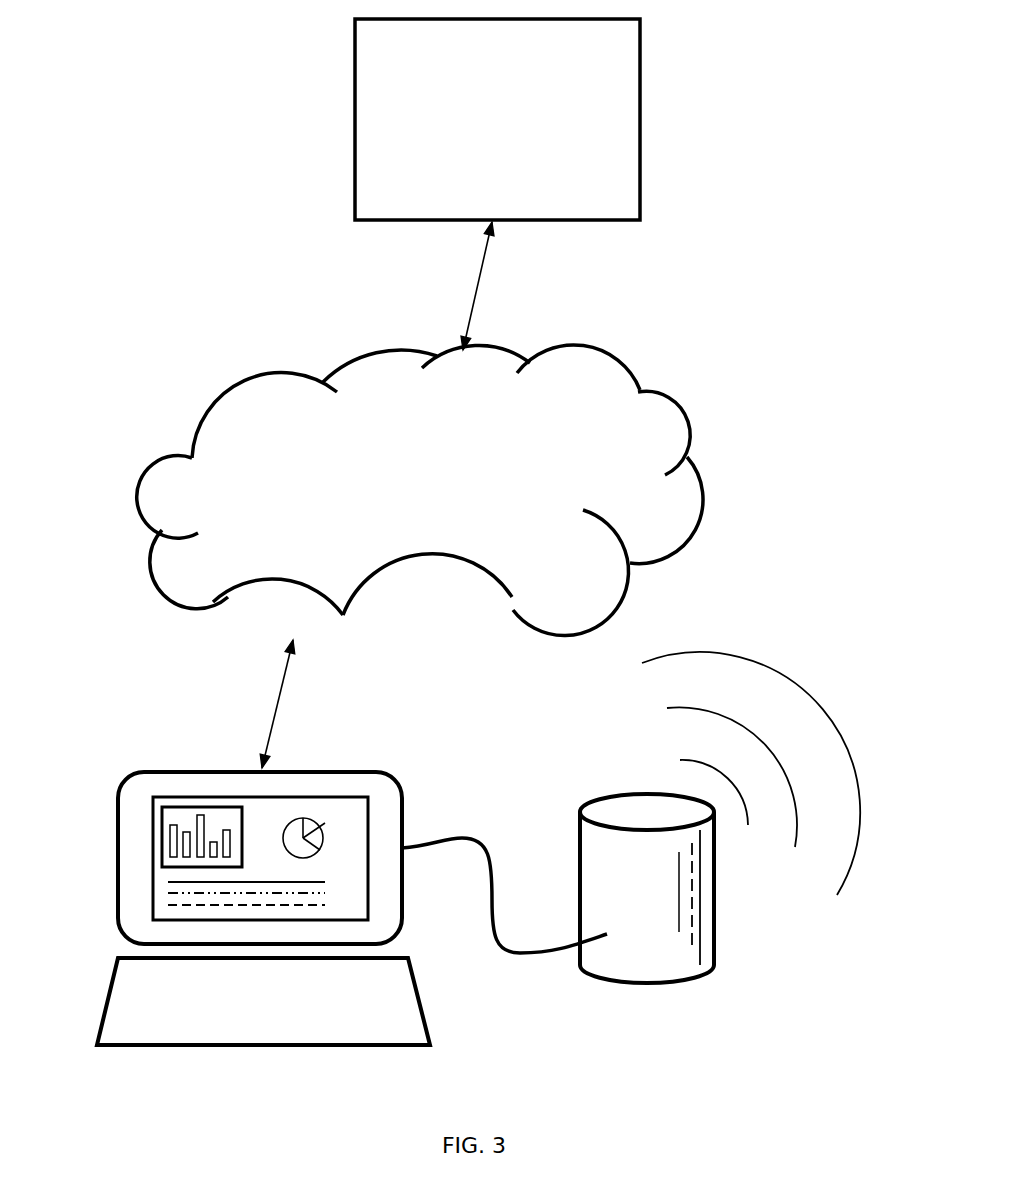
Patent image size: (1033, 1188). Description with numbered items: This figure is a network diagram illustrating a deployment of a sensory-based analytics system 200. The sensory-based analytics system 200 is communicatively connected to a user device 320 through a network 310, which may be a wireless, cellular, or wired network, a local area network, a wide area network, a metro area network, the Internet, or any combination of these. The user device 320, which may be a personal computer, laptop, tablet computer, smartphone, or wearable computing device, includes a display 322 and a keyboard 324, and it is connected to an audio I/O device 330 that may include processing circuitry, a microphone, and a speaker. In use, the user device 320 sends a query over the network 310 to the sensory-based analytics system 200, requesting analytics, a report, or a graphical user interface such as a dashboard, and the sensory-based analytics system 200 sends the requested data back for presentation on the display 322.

The sensory-based analytics system 200 is at (484, 150).
The network 310 is at (432, 526).
The user device 320 is at (95, 857).
The display 322 is at (387, 824).
The keyboard 324 is at (82, 995).
The audio I/O device 330 is at (568, 849).